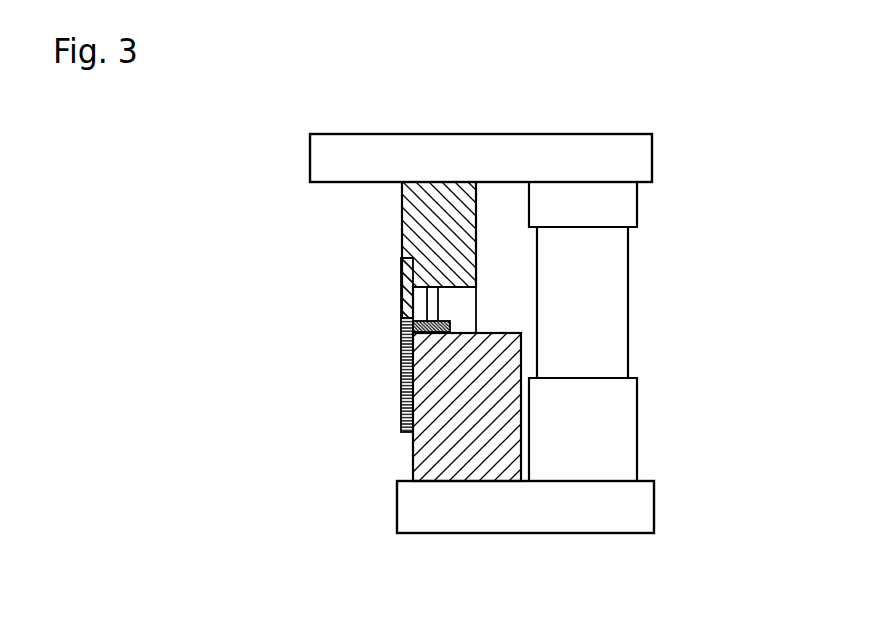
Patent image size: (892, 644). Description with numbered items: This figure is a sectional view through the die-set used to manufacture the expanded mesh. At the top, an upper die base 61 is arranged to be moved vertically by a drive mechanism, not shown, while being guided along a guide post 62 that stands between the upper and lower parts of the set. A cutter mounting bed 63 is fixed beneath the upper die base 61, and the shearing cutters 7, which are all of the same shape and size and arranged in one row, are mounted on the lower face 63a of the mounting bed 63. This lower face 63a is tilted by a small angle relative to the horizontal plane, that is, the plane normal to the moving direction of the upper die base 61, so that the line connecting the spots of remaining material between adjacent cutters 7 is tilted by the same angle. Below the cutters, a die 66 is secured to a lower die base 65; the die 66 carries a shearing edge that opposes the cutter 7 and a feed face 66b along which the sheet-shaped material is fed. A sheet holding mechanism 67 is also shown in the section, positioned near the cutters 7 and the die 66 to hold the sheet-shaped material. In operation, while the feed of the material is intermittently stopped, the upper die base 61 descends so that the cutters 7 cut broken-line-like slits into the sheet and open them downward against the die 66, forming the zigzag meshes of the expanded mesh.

The upper die base 61 is at (555, 152).
The guide post 62 is at (614, 337).
The cutter mounting bed 63 is at (402, 212).
The lower face of the mounting bed 63a is at (402, 272).
The shearing cutter 7 is at (402, 298).
The sheet holding mechanism 67 is at (442, 317).
The die 66 is at (420, 453).
The feed face 66b is at (488, 333).
The lower die base 65 is at (534, 517).